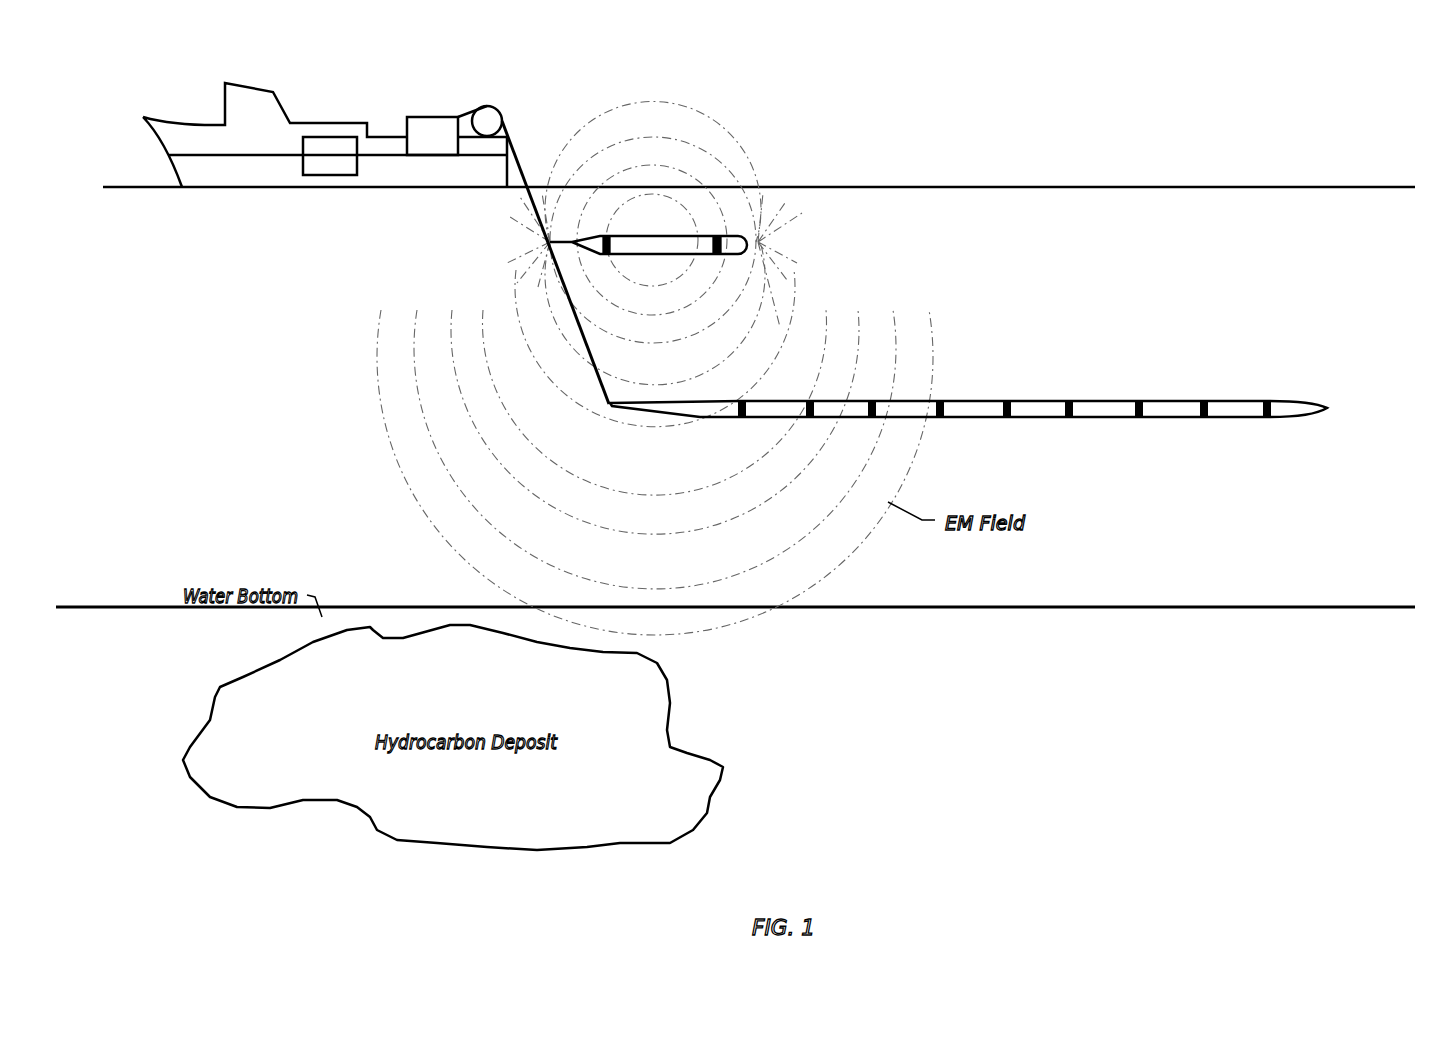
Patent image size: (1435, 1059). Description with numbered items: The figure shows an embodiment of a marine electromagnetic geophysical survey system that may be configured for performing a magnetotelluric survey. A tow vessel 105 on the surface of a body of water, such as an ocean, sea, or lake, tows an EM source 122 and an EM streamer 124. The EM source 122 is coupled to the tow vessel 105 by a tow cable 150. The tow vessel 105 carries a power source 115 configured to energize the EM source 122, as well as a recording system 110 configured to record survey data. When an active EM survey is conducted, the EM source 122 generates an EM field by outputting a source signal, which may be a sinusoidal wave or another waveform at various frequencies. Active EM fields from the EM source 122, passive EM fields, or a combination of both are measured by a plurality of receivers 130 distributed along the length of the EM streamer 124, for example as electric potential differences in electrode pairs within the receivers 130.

The tow vessel 105 is at (230, 83).
The recording system 110 is at (337, 175).
The power source 115 is at (425, 117).
The EM source 122 is at (698, 232).
The EM streamer 124 is at (1208, 425).
The receivers 130 is at (1010, 400).
The tow cable 150 is at (582, 337).